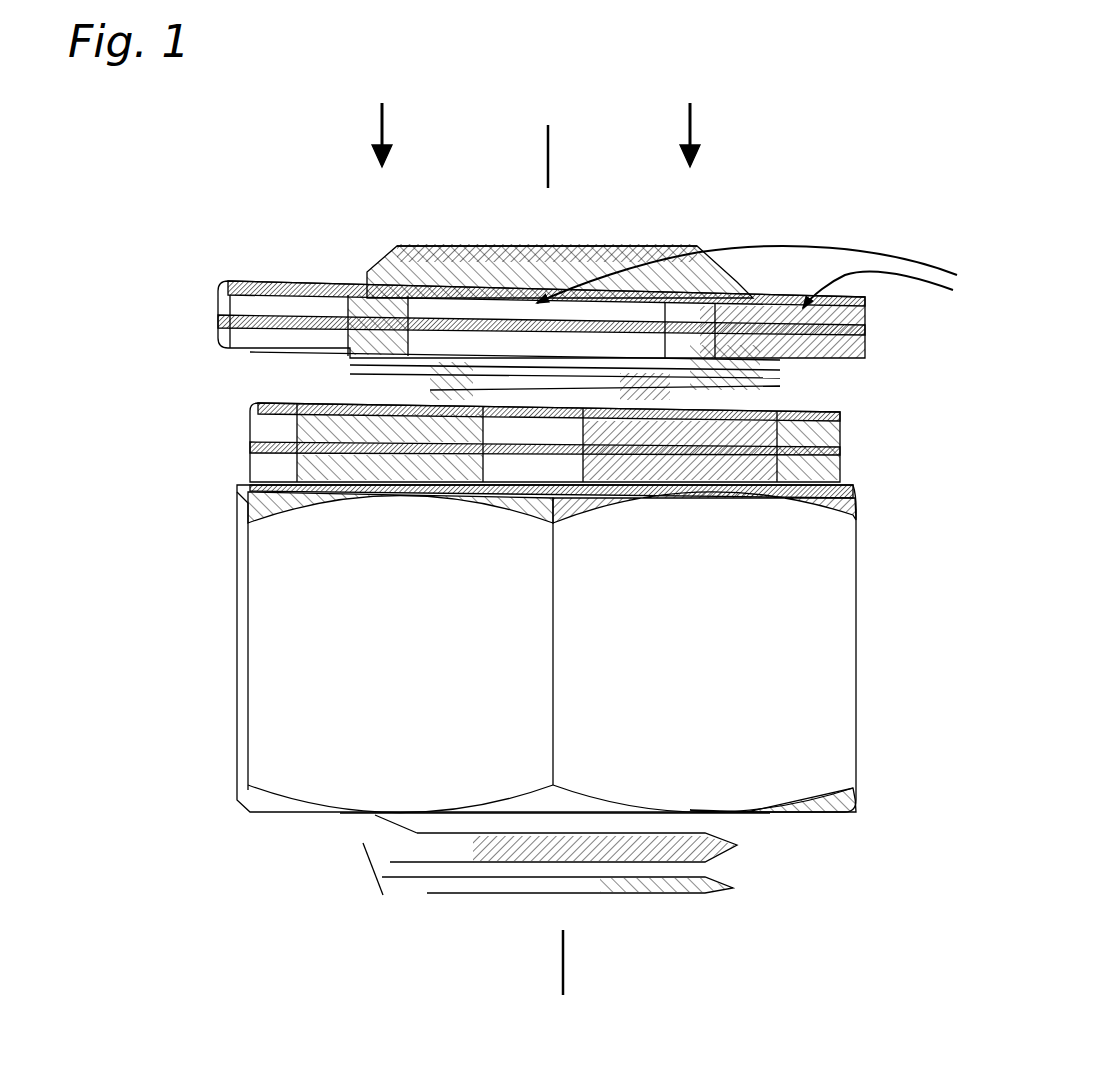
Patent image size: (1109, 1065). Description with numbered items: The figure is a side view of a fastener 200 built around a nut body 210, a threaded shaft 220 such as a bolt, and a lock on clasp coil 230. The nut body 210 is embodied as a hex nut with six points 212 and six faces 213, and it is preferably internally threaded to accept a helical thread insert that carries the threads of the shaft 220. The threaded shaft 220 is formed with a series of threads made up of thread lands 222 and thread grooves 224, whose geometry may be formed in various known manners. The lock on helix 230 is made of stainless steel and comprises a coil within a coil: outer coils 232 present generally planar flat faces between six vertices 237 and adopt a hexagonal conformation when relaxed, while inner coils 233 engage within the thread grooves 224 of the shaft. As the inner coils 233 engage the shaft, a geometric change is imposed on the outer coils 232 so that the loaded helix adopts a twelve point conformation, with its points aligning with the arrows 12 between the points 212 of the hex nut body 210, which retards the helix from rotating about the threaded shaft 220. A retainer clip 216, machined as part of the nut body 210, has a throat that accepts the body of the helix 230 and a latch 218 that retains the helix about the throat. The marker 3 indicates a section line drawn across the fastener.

The fastener 200 is at (845, 115).
The arrows 12 is at (551, 135).
The section line 3 is at (572, 560).
The lock on clasp coil 230 is at (158, 352).
The outer coils 232 is at (314, 268).
The inner coils 233 is at (430, 388).
The retainer clip 216 is at (305, 486).
The latch 218 is at (316, 393).
The vertices 237 is at (556, 466).
The nut body 210 is at (143, 643).
The points 212 is at (562, 688).
The faces 213 is at (772, 685).
The threaded shaft 220 is at (473, 948).
The thread lands 222 is at (381, 876).
The thread grooves 224 is at (414, 842).